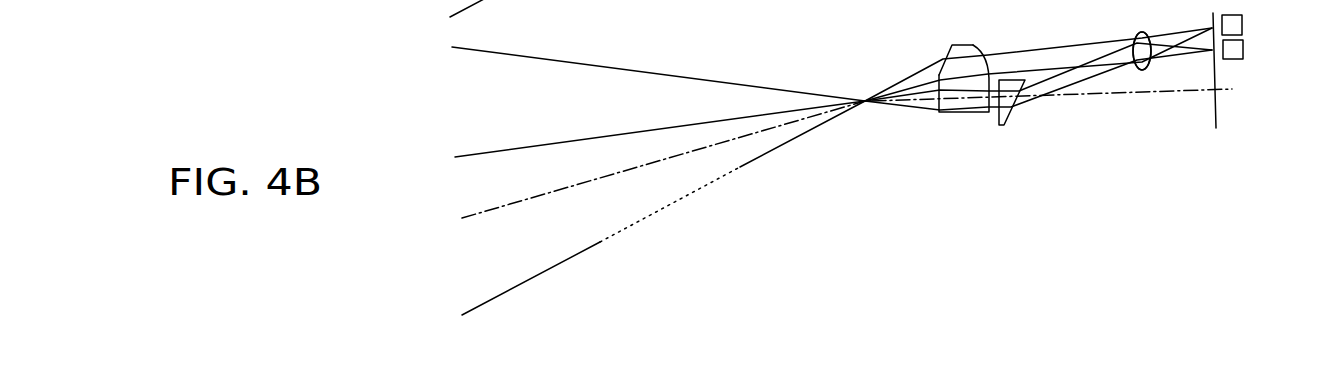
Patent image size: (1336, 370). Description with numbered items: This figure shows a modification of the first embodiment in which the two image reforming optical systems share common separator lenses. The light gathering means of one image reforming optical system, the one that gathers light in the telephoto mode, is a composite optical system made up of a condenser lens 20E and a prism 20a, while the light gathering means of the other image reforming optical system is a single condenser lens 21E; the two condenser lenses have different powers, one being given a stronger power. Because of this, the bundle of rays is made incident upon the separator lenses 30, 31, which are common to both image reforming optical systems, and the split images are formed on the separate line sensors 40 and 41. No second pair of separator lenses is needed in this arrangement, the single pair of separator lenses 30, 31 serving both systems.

The condenser lens 20E is at (952, 114).
The condenser lens 21E is at (955, 50).
The prism 20a is at (1005, 118).
The separator lens 30 is at (1142, 70).
The separator lens 31 is at (1142, 51).
The line sensor 40 is at (1243, 23).
The line sensor 41 is at (1244, 51).